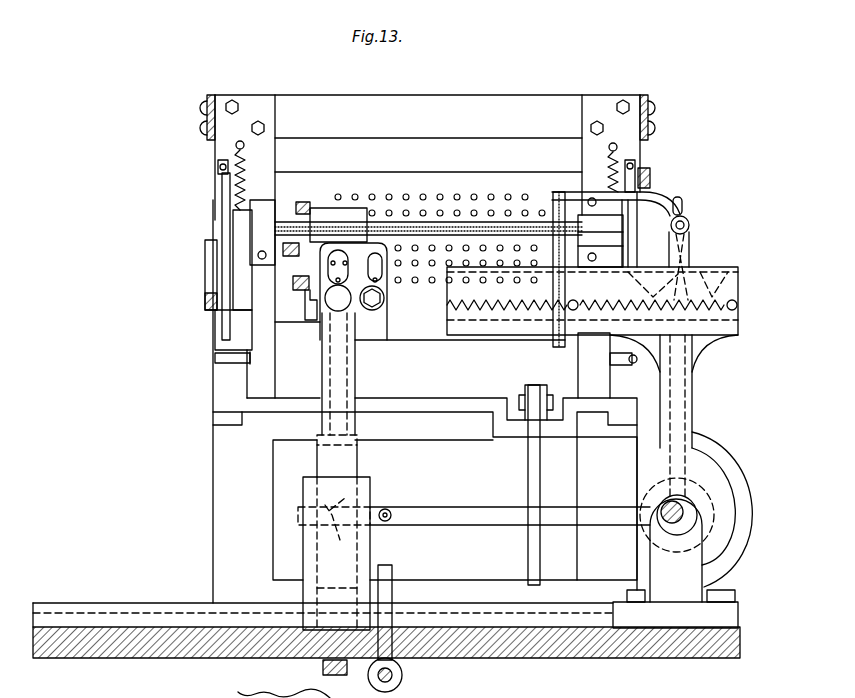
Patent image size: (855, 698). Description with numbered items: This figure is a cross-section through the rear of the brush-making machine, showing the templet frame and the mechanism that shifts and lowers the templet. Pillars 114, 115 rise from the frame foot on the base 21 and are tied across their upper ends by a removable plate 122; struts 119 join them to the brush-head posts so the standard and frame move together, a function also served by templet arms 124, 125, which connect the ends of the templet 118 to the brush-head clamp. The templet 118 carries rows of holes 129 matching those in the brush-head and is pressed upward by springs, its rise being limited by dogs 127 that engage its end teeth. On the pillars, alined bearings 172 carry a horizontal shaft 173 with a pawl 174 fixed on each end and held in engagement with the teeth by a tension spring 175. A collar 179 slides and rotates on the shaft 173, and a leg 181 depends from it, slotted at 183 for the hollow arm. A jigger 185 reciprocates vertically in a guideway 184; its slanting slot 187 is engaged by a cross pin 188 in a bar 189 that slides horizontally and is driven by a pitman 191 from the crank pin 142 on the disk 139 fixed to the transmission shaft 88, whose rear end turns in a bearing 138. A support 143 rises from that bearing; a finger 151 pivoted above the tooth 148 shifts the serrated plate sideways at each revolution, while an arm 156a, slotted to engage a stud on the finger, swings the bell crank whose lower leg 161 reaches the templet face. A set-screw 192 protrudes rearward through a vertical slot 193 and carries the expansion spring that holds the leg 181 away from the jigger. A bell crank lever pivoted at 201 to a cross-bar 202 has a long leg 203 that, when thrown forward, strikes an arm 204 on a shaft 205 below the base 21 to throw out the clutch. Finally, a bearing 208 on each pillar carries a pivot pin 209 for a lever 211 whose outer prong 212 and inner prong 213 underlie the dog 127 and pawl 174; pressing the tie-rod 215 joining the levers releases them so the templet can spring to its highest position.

The base 21 is at (596, 648).
The transmission shaft 88 is at (678, 535).
The pillar 114 is at (213, 478).
The pillar 115 is at (607, 508).
The templet 118 is at (310, 182).
The strut 119 is at (207, 103).
The removable plate 122 is at (488, 100).
The templet arm 124 is at (208, 270).
The templet arm 125 is at (650, 172).
The dog 127 is at (684, 208).
The holes 129 is at (458, 193).
The bearing 138 is at (660, 525).
The disk 139 is at (700, 498).
The crank pin 142 is at (694, 432).
The support 143 is at (720, 336).
The tooth 148 is at (690, 258).
The finger 151 is at (690, 228).
The arm 156a is at (660, 196).
The lower leg 161 is at (490, 342).
The bearing 172 is at (268, 200).
The shaft 173 is at (415, 210).
The pawl 174 is at (233, 291).
The tension spring 175 is at (236, 191).
The collar 179 is at (350, 230).
The leg 181 is at (356, 383).
The slot 183 is at (335, 262).
The guideway 184 is at (310, 551).
The jigger 185 is at (352, 466).
The slanting slot 187 is at (340, 497).
The cross pin 188 is at (336, 530).
The bar 189 is at (386, 510).
The pitman 191 is at (470, 508).
The set-screw 192 is at (352, 305).
The vertical slot 193 is at (385, 305).
The pivot 201 is at (540, 388).
The cross-bar 202 is at (302, 440).
The long leg 203 is at (528, 556).
The arm 204 is at (392, 575).
The shaft 205 is at (402, 672).
The bearing 208 is at (215, 360).
The pivot pin 209 is at (252, 355).
The lever 211 is at (240, 368).
The outer prong 212 is at (224, 336).
The inner prong 213 is at (248, 318).
The tie-rod 215 is at (412, 412).